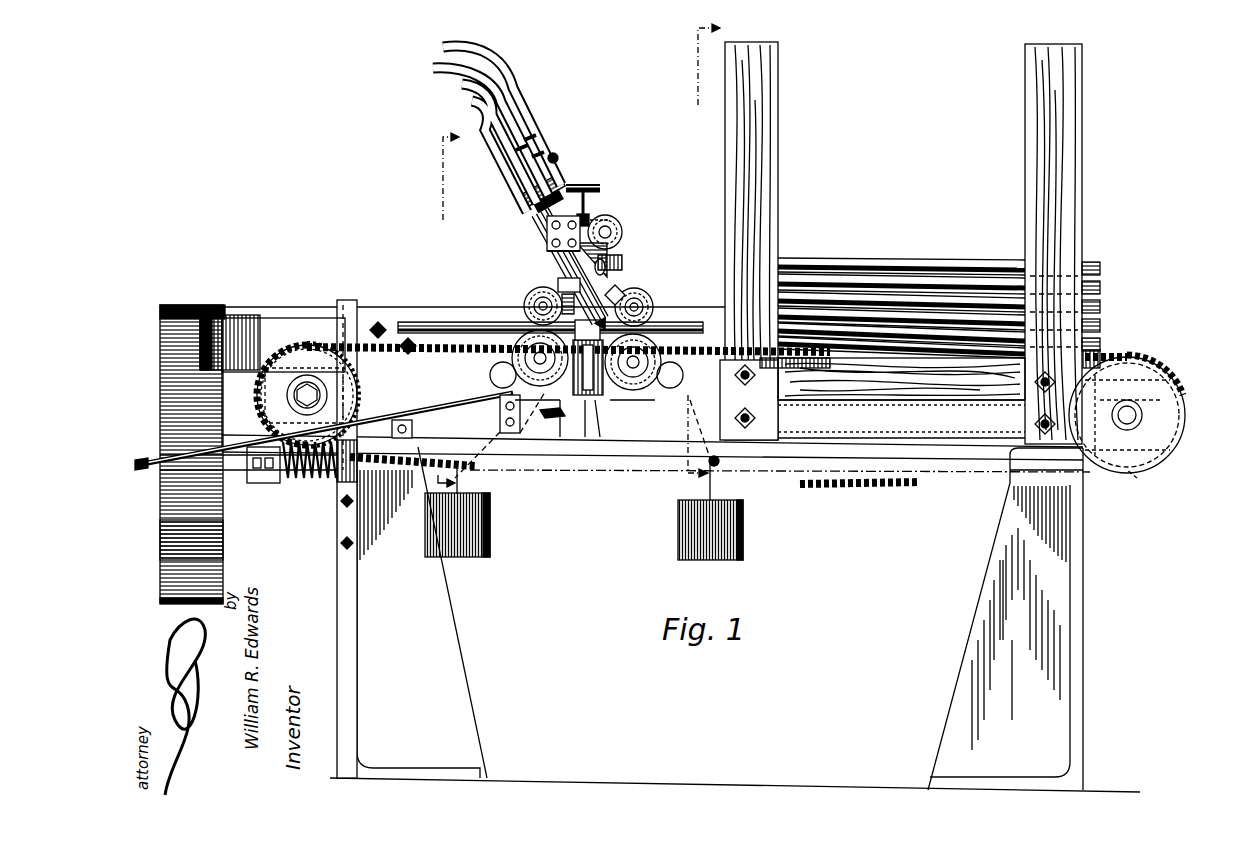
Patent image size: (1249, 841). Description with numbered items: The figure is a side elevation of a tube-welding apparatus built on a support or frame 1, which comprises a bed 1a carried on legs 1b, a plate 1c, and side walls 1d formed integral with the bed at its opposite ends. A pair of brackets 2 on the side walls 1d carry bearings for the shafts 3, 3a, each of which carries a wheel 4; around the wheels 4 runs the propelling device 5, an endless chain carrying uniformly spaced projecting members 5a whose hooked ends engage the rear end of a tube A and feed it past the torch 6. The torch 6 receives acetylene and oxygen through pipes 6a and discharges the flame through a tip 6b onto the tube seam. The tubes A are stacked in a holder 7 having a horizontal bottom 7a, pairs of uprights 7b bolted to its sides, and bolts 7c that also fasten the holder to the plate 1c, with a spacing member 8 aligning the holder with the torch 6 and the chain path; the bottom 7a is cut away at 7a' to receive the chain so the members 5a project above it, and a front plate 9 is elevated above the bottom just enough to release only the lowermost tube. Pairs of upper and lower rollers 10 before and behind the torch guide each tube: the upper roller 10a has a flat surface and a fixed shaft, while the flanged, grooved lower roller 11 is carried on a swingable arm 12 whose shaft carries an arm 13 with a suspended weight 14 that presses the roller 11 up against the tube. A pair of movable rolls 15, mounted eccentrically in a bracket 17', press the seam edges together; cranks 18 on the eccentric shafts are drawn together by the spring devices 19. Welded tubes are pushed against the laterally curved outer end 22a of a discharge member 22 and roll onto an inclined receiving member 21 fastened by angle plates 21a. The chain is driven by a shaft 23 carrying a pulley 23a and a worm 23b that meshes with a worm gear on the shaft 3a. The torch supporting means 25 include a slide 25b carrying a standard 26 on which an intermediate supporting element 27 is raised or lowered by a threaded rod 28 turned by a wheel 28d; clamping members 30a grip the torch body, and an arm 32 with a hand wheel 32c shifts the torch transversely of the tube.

The support or frame 1 is at (735, 619).
The bed 1a is at (594, 446).
The legs 1b is at (463, 650).
The plate 1c is at (455, 310).
The side walls 1d is at (350, 300).
The brackets 2 is at (335, 483).
The shaft 3 is at (1150, 416).
The shaft 3a is at (307, 385).
The wheel 4 is at (272, 393).
The propelling device 5 is at (456, 354).
The projecting members 5a is at (388, 340).
The torch 6 is at (568, 263).
The pipes 6a is at (470, 55).
The tip 6b is at (622, 280).
The holder 7 is at (811, 206).
The bottom 7a is at (901, 398).
The cut-away portion 7a' is at (821, 398).
The uprights 7b is at (730, 162).
The bolts 7c is at (778, 432).
The spacing member 8 is at (440, 308).
The plate 9 is at (722, 312).
The pairs of upper and lower rollers 10 is at (587, 306).
The upper roller 10a is at (530, 288).
The lower roller 11 is at (632, 394).
The swingable arm 12 is at (507, 358).
The arm 13 is at (480, 478).
The weight 14 is at (490, 542).
The movable rolls 15 is at (606, 292).
The bracket 17' is at (604, 454).
The crank 18 is at (575, 402).
The devices 19 is at (556, 420).
The receiving member 21 is at (140, 460).
The angle plates 21a is at (414, 428).
The discharge member 22 is at (318, 300).
The laterally curved outer end 22a is at (215, 304).
The shaft 23 is at (237, 483).
The pulley 23a is at (165, 533).
The worm 23b is at (300, 480).
The torch supporting means 25 is at (604, 208).
The slide 25b is at (568, 290).
The standard 26 is at (636, 262).
The intermediate supporting element 27 is at (622, 246).
The shaft or rod 28 is at (600, 192).
The wheel 28d is at (588, 184).
The clamping members 30a is at (548, 249).
The arm 32 is at (545, 232).
The hand wheel 32c is at (625, 232).
The tube A is at (938, 258).